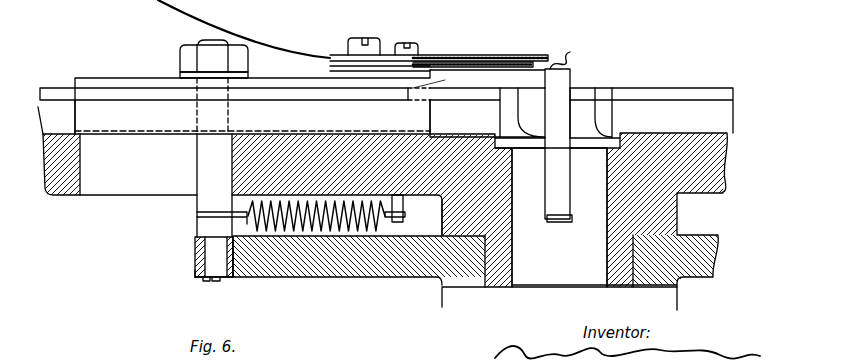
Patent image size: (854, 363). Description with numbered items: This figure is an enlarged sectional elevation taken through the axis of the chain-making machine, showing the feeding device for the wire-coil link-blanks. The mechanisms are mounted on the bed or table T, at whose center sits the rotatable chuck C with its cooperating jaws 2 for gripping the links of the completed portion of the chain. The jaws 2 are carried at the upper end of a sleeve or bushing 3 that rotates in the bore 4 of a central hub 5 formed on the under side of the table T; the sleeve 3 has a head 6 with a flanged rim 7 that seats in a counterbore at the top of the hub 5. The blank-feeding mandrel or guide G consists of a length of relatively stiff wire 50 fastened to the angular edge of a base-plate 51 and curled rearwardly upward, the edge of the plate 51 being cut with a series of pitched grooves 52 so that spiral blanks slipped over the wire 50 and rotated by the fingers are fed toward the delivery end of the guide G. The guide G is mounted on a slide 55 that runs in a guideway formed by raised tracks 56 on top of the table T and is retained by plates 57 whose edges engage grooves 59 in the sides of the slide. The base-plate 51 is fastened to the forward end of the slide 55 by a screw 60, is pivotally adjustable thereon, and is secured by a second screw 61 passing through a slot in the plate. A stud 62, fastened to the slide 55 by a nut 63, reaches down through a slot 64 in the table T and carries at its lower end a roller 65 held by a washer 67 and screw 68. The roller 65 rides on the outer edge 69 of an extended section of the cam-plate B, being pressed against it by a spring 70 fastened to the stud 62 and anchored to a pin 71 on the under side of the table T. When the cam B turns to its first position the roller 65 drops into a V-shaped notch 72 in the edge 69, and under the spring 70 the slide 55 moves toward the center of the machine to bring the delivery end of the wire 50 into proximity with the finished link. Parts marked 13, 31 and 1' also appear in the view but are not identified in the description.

The chuck-jaws 2 is at (557, 144).
The sleeve or bushing 3 is at (559, 217).
The bore 4 is at (513, 268).
The central hub 5 is at (443, 217).
The head 6 is at (591, 113).
The flanged rim 7 is at (617, 134).
The plunger lower end 13 is at (558, 221).
The base 31 is at (683, 291).
The wire 50 is at (247, 38).
The base-plate 51 is at (520, 50).
The grooves 52 is at (462, 56).
The slide 55 is at (252, 117).
The raised ways or tracks 56 is at (487, 112).
The plates 57 is at (477, 87).
The grooves 59 is at (262, 99).
The screw 60 is at (373, 40).
The second screw 61 is at (396, 48).
The stud 62 is at (205, 42).
The nut 63 is at (185, 57).
The slot 64 is at (83, 181).
The roller 65 is at (196, 251).
The washer 67 is at (206, 282).
The screw 68 is at (218, 282).
The outer edge 69 is at (200, 275).
The spring 70 is at (245, 222).
The pin 71 is at (405, 205).
The V-shaped notch 72 is at (240, 263).
The cam-plate B is at (355, 277).
The chuck C is at (574, 87).
The mandrel or guide G is at (453, 25).
The bed or table T is at (67, 196).
The hook 1' is at (567, 52).